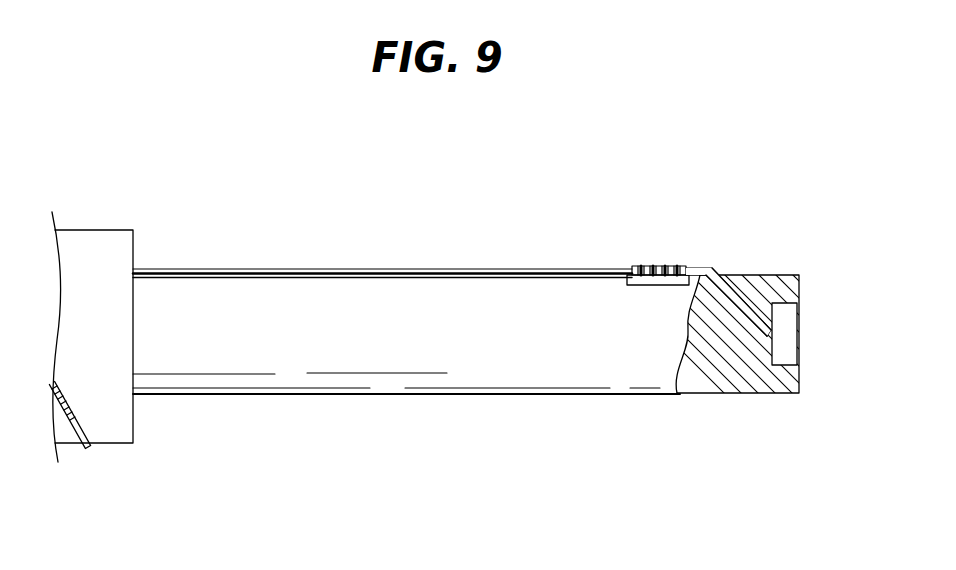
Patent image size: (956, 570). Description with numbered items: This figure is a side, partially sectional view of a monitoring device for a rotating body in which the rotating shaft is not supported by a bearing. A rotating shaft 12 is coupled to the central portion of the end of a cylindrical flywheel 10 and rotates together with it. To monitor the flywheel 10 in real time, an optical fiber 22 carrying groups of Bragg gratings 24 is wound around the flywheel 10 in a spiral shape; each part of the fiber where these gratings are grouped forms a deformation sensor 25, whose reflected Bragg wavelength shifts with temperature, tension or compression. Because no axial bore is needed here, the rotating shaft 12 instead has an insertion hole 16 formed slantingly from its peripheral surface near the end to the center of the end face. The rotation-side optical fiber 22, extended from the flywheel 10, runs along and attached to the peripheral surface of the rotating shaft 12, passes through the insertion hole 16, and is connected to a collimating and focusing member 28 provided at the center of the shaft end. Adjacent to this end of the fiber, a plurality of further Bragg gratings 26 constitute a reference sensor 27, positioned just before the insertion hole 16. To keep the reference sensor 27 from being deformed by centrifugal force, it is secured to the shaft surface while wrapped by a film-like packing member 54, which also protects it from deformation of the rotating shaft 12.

The flywheel 10 is at (122, 422).
The rotating shaft 12 is at (388, 384).
The insertion hole 16 is at (745, 292).
The optical fiber 22 is at (478, 270).
The Bragg gratings 24 is at (57, 398).
The deformation sensor 25 is at (68, 383).
The Bragg gratings 26 is at (672, 267).
The reference sensor 27 is at (677, 266).
The collimating and focusing member 28 is at (788, 347).
The film-like packing member 54 is at (700, 275).